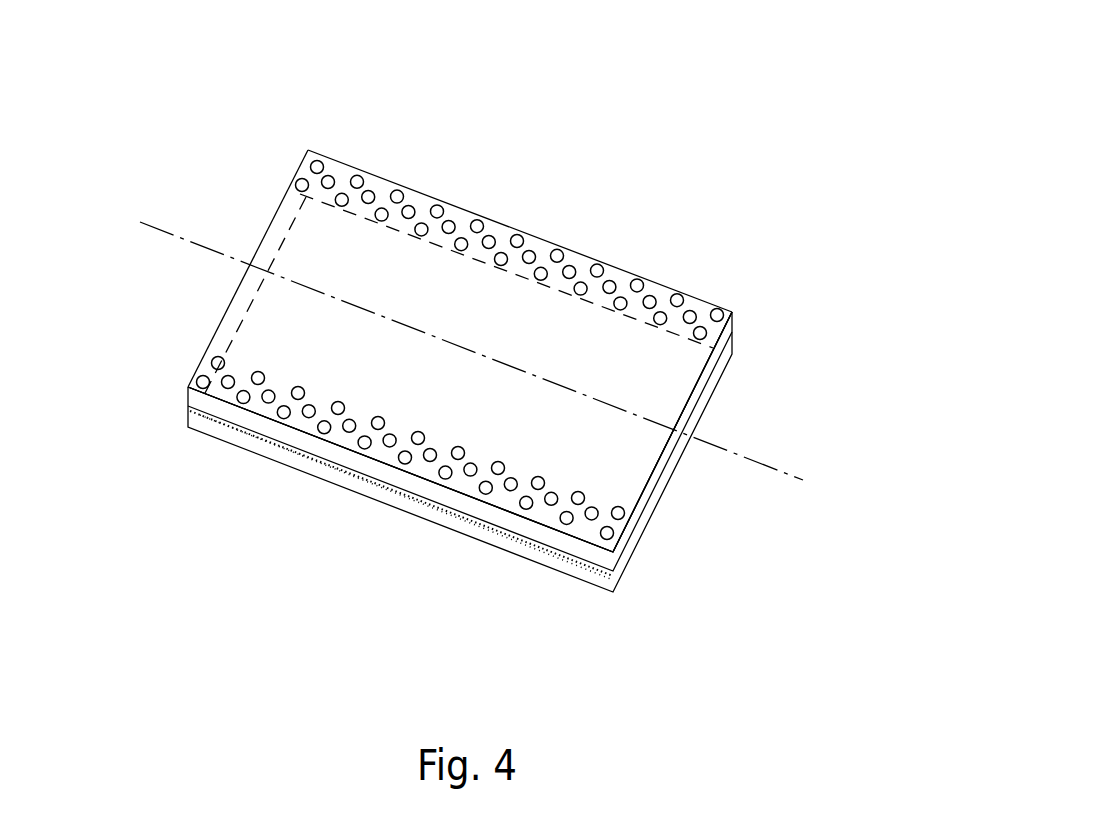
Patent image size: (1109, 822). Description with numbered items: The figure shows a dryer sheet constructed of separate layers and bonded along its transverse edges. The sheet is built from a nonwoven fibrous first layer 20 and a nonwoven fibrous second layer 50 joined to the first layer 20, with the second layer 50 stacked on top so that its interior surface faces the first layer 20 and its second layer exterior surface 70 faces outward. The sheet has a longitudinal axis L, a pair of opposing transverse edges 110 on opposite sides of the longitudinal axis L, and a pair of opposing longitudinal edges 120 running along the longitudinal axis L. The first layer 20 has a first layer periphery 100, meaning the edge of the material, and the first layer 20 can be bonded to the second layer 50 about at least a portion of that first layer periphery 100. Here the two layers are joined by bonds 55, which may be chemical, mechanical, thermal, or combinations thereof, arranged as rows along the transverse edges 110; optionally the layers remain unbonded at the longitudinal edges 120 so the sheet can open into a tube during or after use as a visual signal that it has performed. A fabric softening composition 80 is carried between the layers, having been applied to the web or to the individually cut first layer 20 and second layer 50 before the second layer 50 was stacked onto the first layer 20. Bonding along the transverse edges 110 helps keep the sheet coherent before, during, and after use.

The first layer 20 is at (623, 552).
The second layer 50 is at (657, 383).
The bonds 55 is at (370, 190).
The second layer exterior surface 70 is at (577, 337).
The fabric softening composition 80 is at (543, 550).
The first layer periphery 100 is at (275, 218).
The transverse edges 110 is at (465, 210).
The longitudinal edges 120 is at (233, 295).
The longitudinal axis L is at (793, 472).